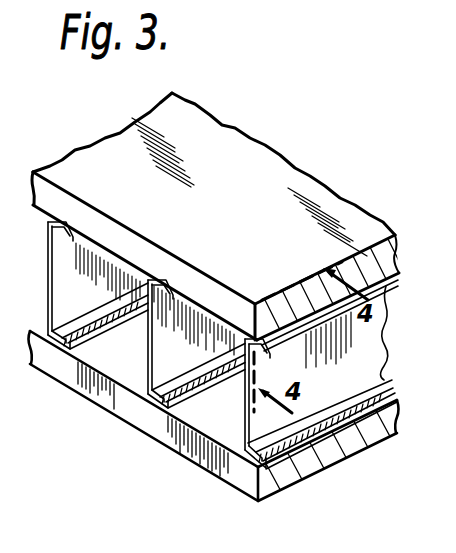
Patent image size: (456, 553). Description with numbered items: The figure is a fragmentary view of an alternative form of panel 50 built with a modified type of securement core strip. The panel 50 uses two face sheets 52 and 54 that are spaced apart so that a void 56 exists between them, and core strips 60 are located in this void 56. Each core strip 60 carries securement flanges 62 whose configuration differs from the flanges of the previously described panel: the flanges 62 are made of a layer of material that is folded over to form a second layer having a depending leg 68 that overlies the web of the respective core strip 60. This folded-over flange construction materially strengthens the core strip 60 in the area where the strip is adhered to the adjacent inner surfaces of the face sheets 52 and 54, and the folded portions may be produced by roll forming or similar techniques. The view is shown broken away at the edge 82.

The panel 50 is at (297, 165).
The face sheet 52 is at (228, 146).
The face sheet 54 is at (217, 478).
The void 56 is at (228, 419).
The core strip 60 is at (243, 345).
The securement flange 62 is at (395, 281).
The depending leg 68 is at (378, 378).
The broken edge 82 is at (313, 183).